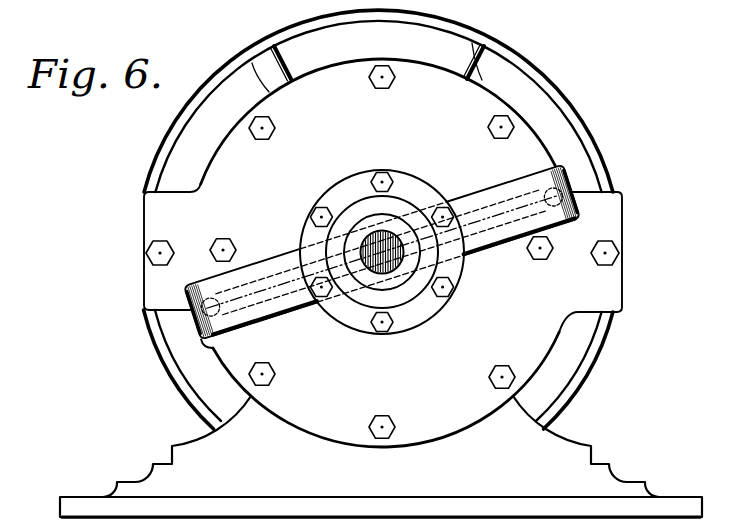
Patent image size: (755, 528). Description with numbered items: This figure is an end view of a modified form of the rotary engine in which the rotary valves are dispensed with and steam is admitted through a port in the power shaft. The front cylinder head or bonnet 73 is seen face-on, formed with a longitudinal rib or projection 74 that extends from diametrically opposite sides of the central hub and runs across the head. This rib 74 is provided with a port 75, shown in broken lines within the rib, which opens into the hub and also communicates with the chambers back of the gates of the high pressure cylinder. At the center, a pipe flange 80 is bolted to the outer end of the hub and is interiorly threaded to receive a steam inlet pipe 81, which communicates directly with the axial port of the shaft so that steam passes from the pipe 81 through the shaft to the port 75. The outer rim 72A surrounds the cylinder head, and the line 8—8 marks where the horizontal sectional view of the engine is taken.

The section line 8— 8 is at (188, 306).
The rim / brake band 72A is at (586, 122).
The front cylinder head or bonnet 73 is at (380, 253).
The longitudinal rib or projection 74 is at (279, 311).
The port 75 is at (265, 259).
The pipe flange 80 is at (407, 182).
The steam inlet pipe 81 is at (395, 282).